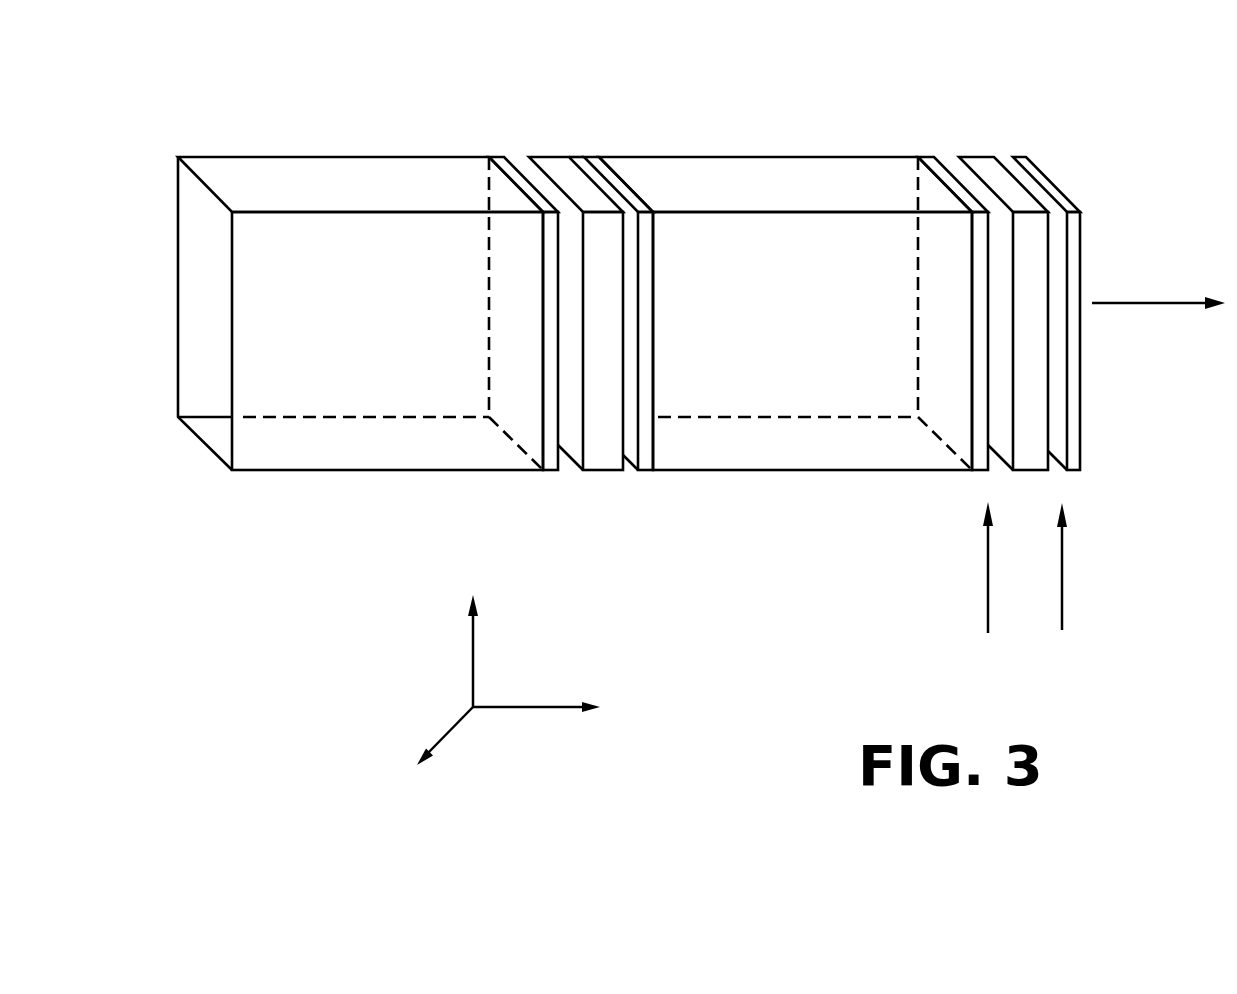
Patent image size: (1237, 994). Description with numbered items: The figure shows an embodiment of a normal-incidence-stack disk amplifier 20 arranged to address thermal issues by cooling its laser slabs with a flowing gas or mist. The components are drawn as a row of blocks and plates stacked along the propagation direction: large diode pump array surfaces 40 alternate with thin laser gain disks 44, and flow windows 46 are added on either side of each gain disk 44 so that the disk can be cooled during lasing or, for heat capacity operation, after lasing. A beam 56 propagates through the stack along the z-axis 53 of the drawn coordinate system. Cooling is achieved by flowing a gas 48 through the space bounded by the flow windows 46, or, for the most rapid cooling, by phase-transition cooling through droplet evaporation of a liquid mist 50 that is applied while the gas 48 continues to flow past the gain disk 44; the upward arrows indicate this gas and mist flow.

The normal-incidence-stack disk amplifier 20 is at (1130, 73).
The diode pump array surface 40 is at (575, 278).
The laser gain disk 44 is at (788, 268).
The flow window 46 is at (575, 527).
The gas 48 is at (1025, 570).
The liquid mist 50 is at (1025, 570).
The z-axis 53 is at (523, 707).
The beam 56 is at (1164, 271).